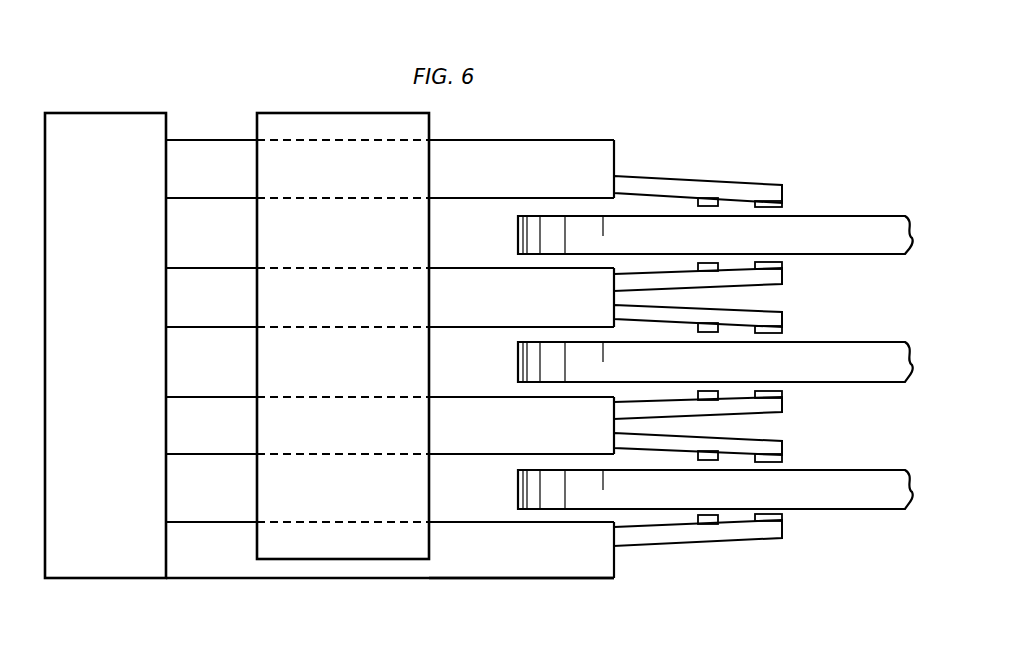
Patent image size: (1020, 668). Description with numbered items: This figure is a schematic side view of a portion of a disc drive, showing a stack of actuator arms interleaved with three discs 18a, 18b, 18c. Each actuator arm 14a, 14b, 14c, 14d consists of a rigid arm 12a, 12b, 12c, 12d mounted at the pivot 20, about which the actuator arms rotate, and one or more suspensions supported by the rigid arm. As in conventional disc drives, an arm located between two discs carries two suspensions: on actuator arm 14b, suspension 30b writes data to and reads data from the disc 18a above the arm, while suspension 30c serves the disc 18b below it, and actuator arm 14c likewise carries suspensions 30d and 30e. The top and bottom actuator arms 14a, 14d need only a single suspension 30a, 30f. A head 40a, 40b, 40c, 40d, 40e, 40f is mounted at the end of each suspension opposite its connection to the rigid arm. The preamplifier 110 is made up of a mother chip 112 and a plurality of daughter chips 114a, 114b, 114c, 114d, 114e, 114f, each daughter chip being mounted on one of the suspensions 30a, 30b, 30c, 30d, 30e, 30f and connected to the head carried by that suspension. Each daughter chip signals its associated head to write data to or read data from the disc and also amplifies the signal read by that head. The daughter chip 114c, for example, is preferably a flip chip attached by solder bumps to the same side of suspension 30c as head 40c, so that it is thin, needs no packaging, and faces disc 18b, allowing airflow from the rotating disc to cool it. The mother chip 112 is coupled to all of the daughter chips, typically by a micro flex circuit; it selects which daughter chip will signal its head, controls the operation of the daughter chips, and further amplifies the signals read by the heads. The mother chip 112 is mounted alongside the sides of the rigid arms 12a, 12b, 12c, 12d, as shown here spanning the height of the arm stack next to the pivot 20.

The pivot 20 is at (120, 356).
The preamplifier 110 is at (505, 305).
The mother chip 112 is at (362, 244).
The rigid arm 12a is at (507, 182).
The rigid arm 12b is at (507, 309).
The rigid arm 12c is at (507, 437).
The rigid arm 12d is at (507, 562).
The top actuator arm 14a is at (571, 139).
The actuator arm 14b is at (462, 267).
The actuator arm 14c is at (464, 396).
The bottom actuator arm 14d is at (571, 579).
The disc 18a is at (885, 215).
The disc 18b is at (885, 341).
The disc 18c is at (885, 510).
The suspension 30a is at (663, 176).
The suspension 30b is at (760, 284).
The suspension 30c is at (636, 310).
The suspension 30d is at (760, 412).
The suspension 30e is at (636, 438).
The suspension 30f is at (688, 545).
The head 40a is at (784, 202).
The head 40b is at (784, 267).
The head 40c is at (784, 331).
The head 40d is at (784, 393).
The head 40e is at (784, 459).
The head 40f is at (784, 518).
The daughter chip 114a is at (707, 207).
The daughter chip 114b is at (709, 262).
The daughter chip 114c is at (709, 334).
The daughter chip 114d is at (707, 391).
The daughter chip 114e is at (707, 462).
The daughter chip 114f is at (709, 515).